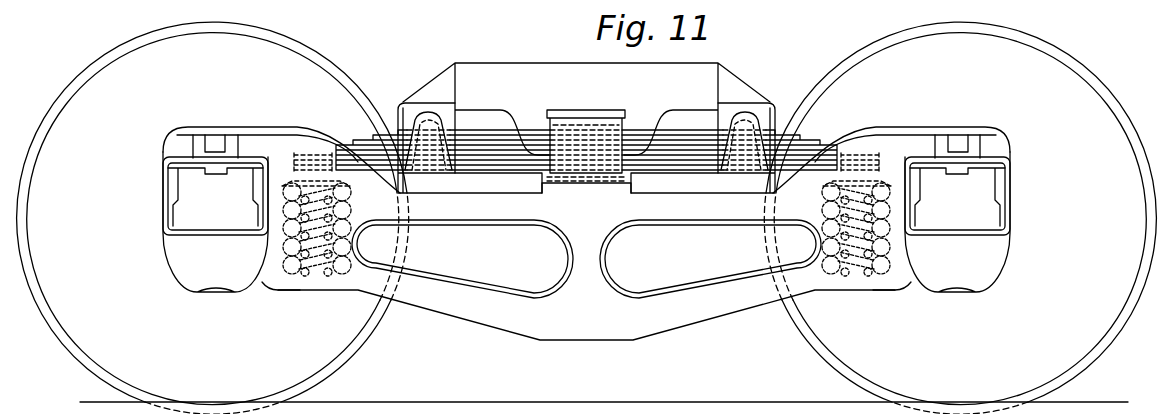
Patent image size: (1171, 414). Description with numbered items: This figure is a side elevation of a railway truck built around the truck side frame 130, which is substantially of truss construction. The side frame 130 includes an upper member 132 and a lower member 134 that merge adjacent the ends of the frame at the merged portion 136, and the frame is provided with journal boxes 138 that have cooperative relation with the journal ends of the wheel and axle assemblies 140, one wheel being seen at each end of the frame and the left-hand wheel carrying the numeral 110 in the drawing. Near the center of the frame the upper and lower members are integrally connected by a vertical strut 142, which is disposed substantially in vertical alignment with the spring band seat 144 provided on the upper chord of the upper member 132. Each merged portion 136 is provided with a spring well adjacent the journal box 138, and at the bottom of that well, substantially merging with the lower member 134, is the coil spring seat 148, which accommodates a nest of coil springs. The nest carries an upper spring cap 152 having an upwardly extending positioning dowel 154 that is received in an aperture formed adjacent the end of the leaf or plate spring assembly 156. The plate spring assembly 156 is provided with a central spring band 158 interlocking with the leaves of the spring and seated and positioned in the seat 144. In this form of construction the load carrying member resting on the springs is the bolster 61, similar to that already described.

The bolster 61 is at (525, 75).
The wheel 110 is at (95, 95).
The truck side frame 130 is at (586, 234).
The upper member 132 is at (677, 212).
The lower member 134 is at (622, 332).
The merged portion 136 is at (272, 270).
The journal box 138 is at (187, 272).
The wheel and axle assembly 140 is at (1063, 67).
The vertical strut 142 is at (580, 259).
The spring band seat 144 is at (633, 183).
The coil spring seat 148 is at (317, 277).
The upper spring cap 152 is at (880, 182).
The positioning dowel 154 is at (868, 170).
The plate spring assembly 156 is at (800, 152).
The central spring band 158 is at (593, 133).